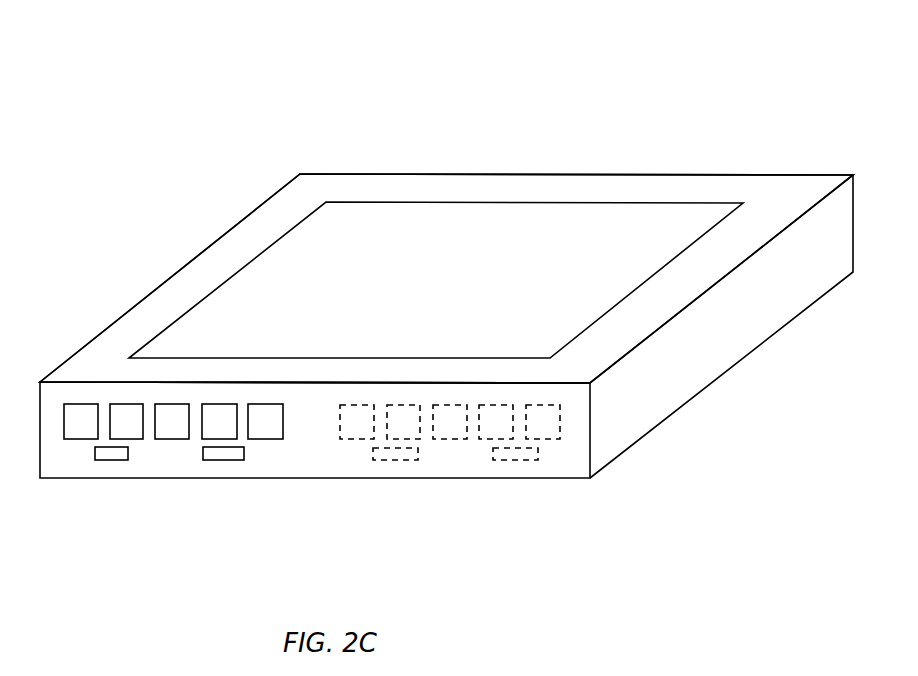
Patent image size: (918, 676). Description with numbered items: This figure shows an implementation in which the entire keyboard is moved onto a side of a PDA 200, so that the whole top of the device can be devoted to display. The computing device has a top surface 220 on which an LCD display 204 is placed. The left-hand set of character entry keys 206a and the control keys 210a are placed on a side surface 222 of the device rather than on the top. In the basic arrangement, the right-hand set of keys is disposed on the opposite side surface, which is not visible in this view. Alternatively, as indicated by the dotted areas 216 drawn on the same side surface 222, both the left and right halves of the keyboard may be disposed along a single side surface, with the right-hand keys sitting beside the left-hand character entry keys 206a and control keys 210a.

The PDA 200 is at (649, 82).
The LCD display 204 is at (510, 225).
The top surface 220 is at (679, 190).
The character entry keys 206a is at (100, 395).
The control keys 210a is at (166, 456).
The dotted areas 216 is at (452, 466).
The side surface 222 is at (547, 468).